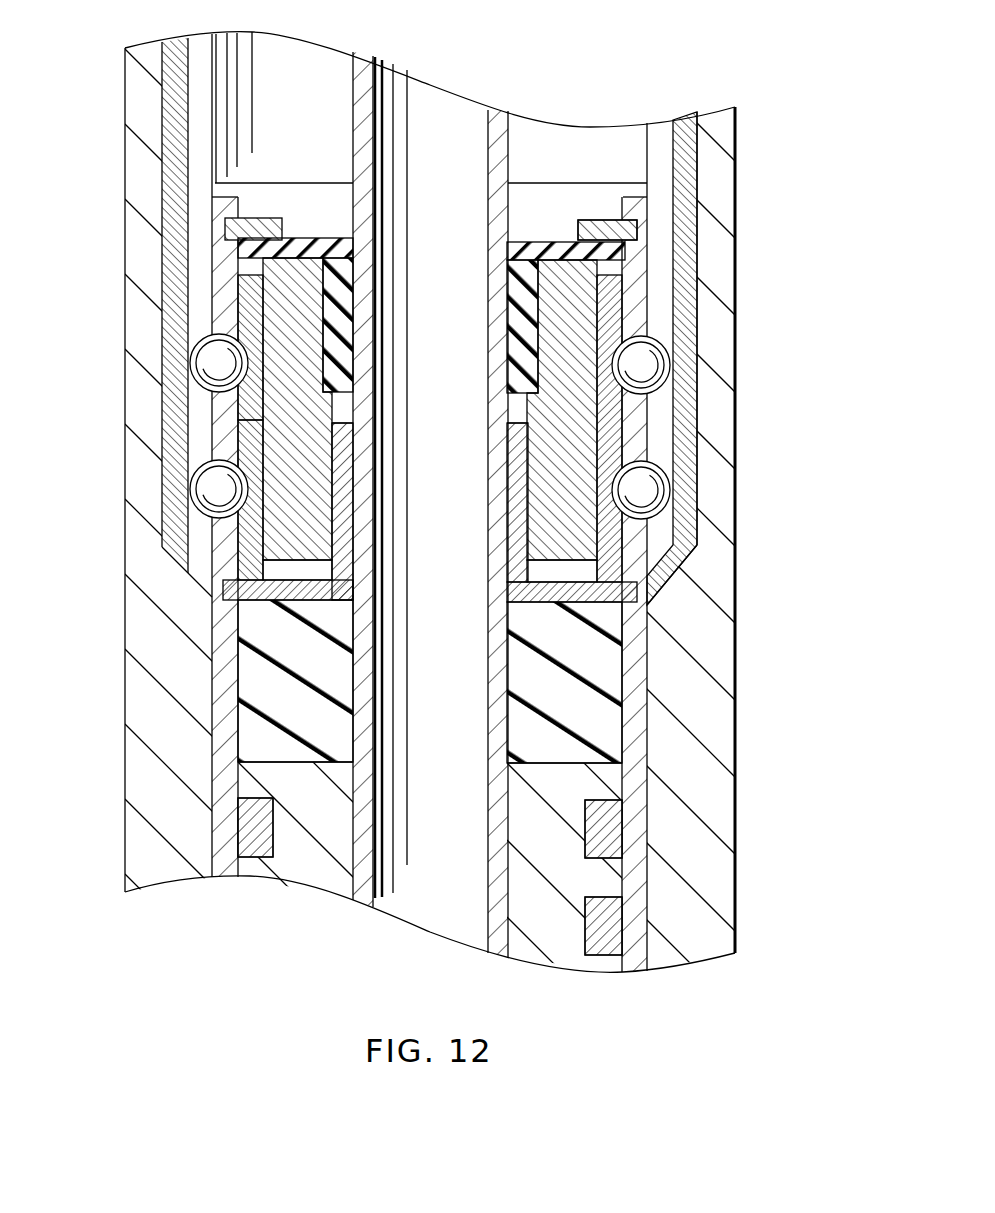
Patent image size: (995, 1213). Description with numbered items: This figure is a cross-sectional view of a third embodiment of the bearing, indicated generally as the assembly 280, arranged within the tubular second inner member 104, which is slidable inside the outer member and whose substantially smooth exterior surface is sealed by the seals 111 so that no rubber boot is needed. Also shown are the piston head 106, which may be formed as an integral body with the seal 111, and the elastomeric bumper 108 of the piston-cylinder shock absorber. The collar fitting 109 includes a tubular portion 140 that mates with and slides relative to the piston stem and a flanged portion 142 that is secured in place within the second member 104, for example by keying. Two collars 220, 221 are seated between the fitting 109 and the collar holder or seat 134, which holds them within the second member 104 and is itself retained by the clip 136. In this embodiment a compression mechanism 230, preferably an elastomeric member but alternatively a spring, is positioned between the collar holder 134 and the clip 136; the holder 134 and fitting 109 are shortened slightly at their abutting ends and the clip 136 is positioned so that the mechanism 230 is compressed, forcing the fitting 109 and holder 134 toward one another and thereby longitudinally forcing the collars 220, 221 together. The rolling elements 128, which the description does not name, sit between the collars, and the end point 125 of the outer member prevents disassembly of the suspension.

The second inner sleeve or member 104 is at (638, 668).
The piston head 106 is at (247, 784).
The elastomeric bumper 108 is at (253, 729).
The collar fitting 109 is at (303, 580).
The seals 111 is at (330, 248).
The end point 125 is at (687, 530).
The ball bearings 128 is at (205, 362).
The collar holder or seat 134 is at (587, 272).
The clip 136 is at (606, 228).
The tubular portion 140 is at (333, 473).
The flanged portion 142 is at (262, 590).
The collar 220 is at (247, 447).
The collar 221 is at (247, 300).
The compression mechanism 230 is at (558, 247).
The swivel assembly 280 is at (788, 372).